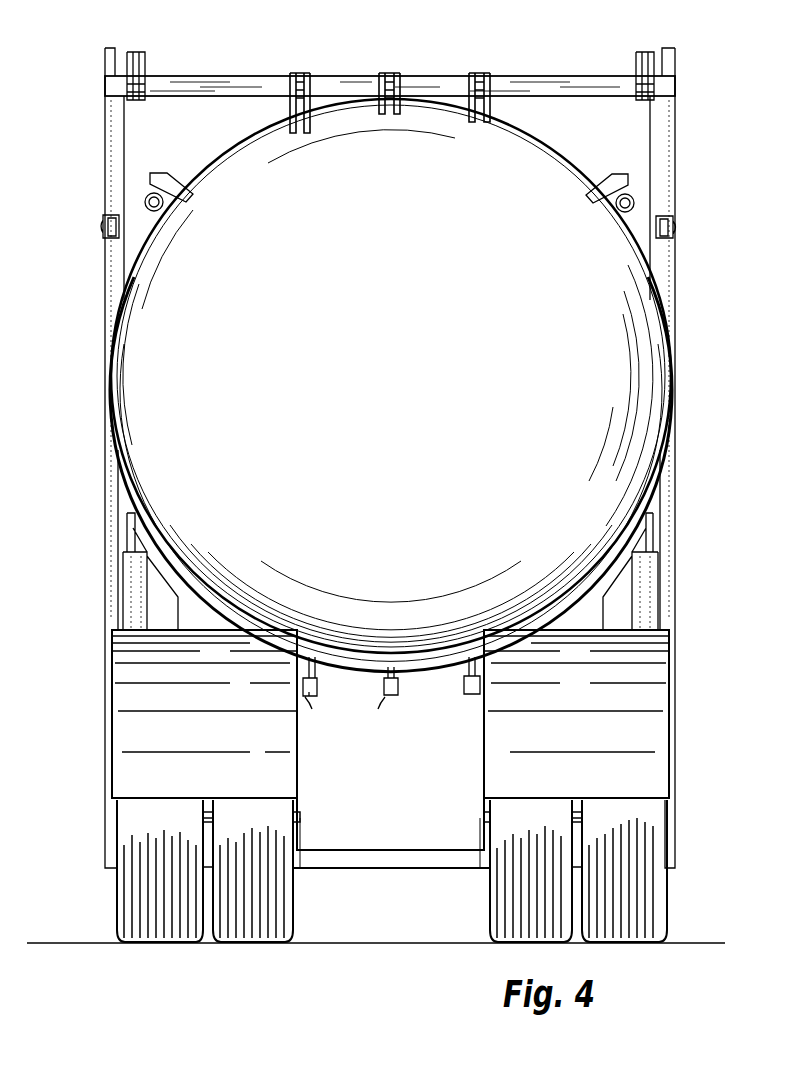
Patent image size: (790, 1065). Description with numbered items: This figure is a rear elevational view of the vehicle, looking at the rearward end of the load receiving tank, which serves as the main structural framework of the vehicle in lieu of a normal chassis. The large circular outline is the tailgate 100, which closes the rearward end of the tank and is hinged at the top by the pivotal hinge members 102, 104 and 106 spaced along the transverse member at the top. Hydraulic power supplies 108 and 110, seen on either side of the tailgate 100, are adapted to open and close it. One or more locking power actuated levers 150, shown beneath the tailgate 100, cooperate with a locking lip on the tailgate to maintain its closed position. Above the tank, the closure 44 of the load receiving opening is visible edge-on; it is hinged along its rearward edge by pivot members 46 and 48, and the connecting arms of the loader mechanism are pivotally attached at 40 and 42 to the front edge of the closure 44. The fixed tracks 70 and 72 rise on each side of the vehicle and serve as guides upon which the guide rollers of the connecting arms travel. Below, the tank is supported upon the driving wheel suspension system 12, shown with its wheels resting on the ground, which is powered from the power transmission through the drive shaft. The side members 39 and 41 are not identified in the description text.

The driving wheel suspension system 12 is at (102, 900).
The left vertical support 39 is at (132, 598).
The pivotal attachment 40 is at (146, 63).
The right vertical support 41 is at (648, 608).
The pivotal attachment 42 is at (648, 52).
The closure 44 is at (543, 88).
The pivot member 46 is at (656, 92).
The pivot member 48 is at (128, 90).
The fixed track 70 is at (106, 526).
The fixed track 72 is at (674, 526).
The tailgate 100 is at (410, 352).
The pivotal hinge member 102 is at (480, 73).
The pivotal hinge member 104 is at (383, 73).
The pivotal hinge member 106 is at (297, 73).
The hydraulic power supply 108 is at (630, 212).
The hydraulic power supply 110 is at (150, 212).
The locking power actuated lever 150 is at (468, 689).